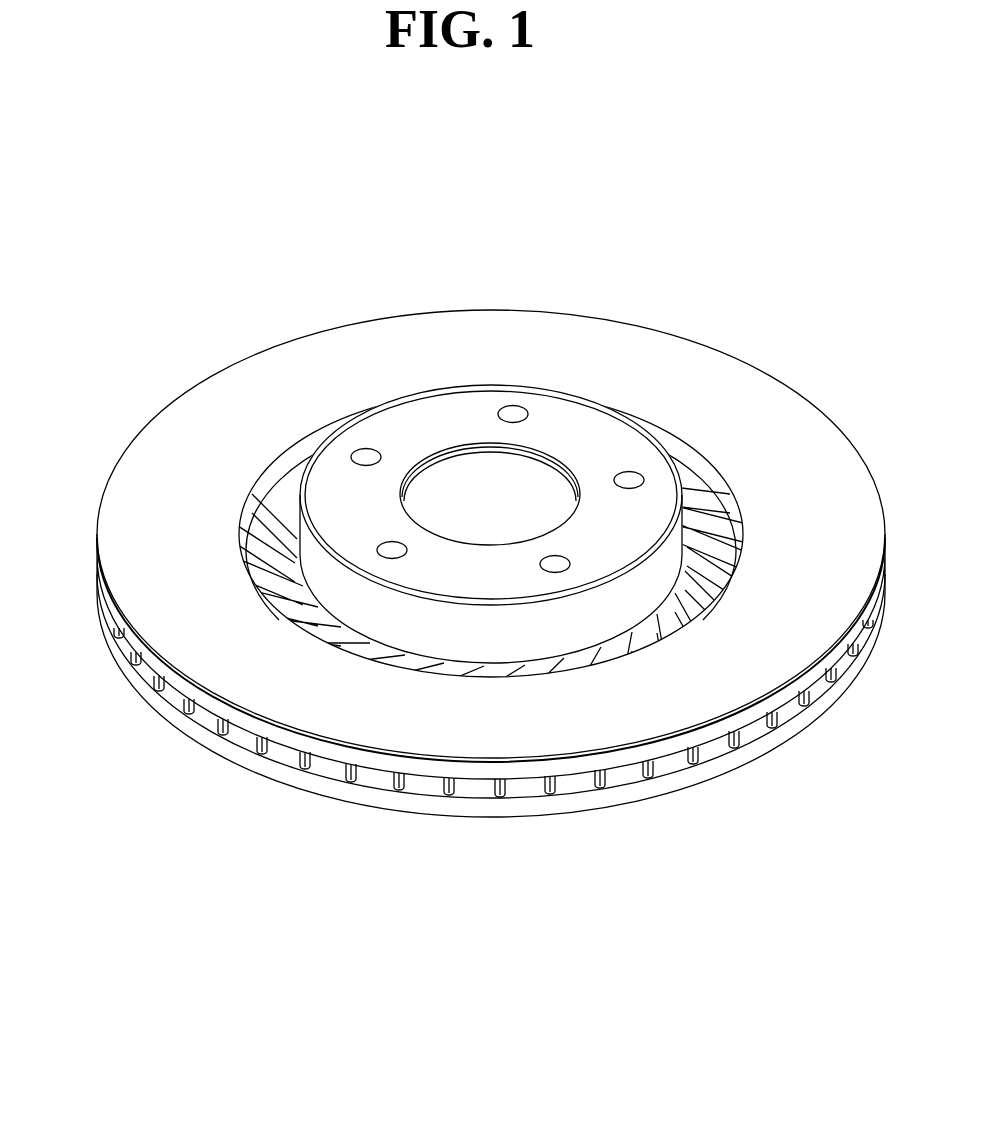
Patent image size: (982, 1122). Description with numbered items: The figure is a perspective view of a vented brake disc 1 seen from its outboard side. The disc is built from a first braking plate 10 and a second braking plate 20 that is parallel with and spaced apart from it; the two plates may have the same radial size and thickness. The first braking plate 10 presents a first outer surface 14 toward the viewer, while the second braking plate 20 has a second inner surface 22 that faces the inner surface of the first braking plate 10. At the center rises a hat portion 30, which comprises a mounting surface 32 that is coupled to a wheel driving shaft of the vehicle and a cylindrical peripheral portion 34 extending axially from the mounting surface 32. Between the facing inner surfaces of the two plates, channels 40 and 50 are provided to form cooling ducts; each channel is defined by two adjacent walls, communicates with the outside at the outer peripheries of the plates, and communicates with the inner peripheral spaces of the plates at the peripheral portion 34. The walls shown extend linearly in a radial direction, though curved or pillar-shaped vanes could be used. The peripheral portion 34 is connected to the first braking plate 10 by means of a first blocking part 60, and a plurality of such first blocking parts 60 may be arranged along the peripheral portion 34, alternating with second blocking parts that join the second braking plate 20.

The vented brake disc 1 is at (460, 545).
The first braking plate 10 is at (265, 342).
The first outer surface 14 is at (205, 465).
The second braking plate 20 is at (642, 803).
The second inner surface 22 is at (525, 790).
The hat portion 30 is at (387, 554).
The mounting surface 32 is at (357, 498).
The peripheral portion 34 is at (625, 610).
The channel 40 is at (424, 795).
The channel 50 is at (476, 798).
The first blocking part 60 is at (316, 625).